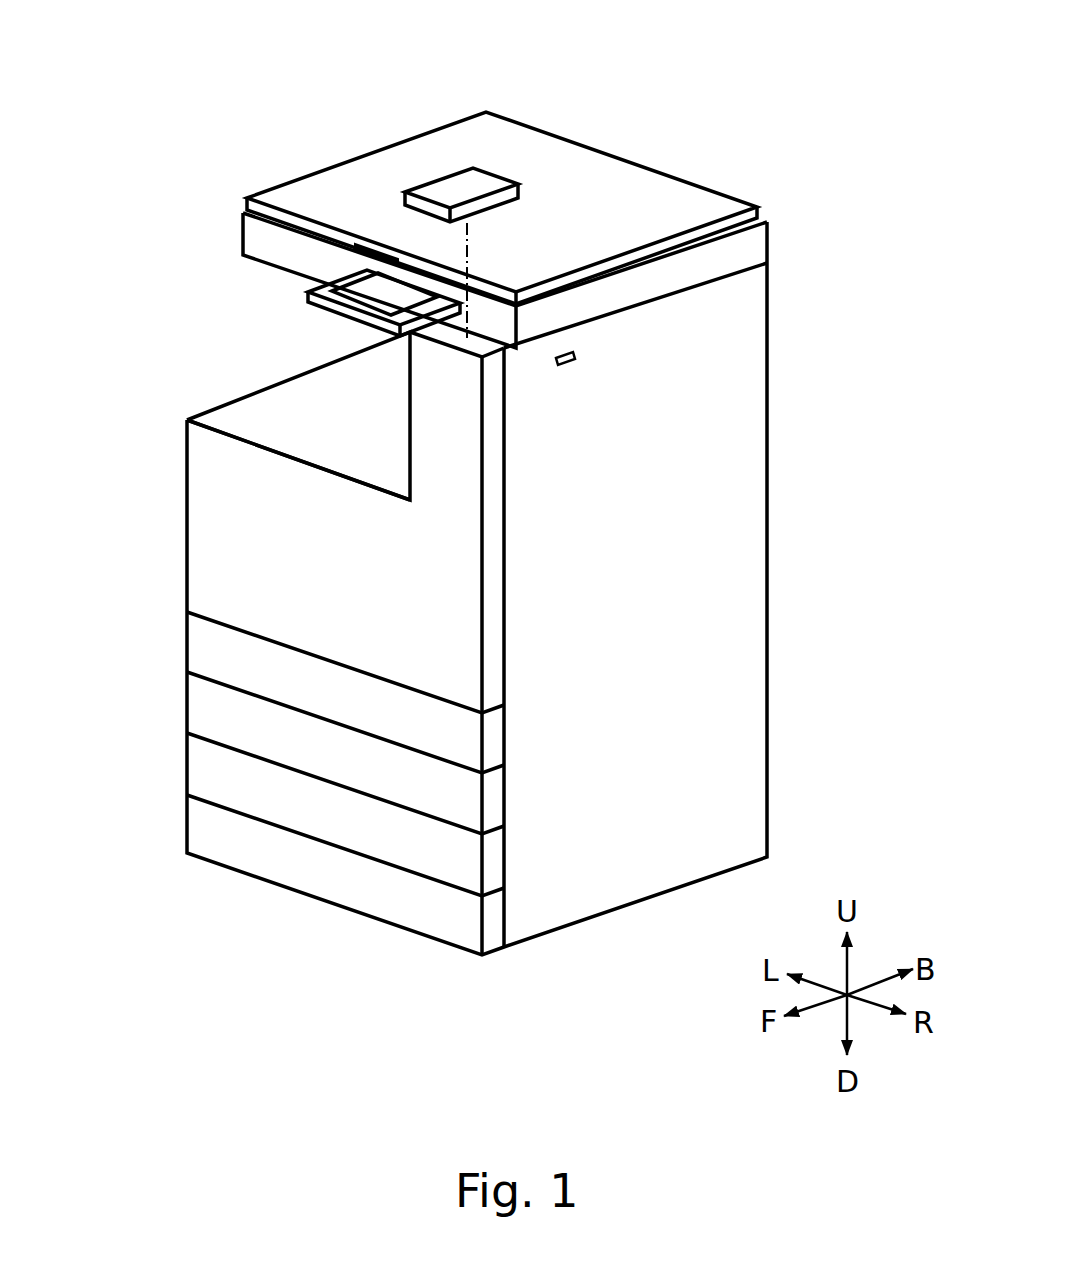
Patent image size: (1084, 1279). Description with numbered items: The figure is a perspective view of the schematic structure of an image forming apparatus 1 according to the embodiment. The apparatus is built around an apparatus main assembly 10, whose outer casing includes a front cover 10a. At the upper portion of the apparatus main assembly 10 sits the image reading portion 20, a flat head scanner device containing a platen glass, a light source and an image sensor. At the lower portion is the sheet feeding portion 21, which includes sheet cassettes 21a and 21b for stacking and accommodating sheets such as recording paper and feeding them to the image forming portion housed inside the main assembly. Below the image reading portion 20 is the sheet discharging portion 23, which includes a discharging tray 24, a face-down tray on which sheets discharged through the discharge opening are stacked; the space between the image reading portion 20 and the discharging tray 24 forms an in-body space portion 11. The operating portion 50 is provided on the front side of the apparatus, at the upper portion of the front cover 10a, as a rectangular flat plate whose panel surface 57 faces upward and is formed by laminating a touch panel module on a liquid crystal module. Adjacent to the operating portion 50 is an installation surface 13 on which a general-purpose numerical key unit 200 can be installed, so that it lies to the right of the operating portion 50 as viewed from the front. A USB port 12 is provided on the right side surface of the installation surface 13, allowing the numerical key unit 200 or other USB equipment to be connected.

The image forming apparatus 1 is at (377, 107).
The image forming apparatus main assembly 10 is at (748, 482).
The front cover 10a is at (452, 494).
The in-body space portion 11 is at (371, 454).
The USB port 12 is at (570, 366).
The installation surface 13 is at (486, 338).
The image reading portion 20 is at (698, 154).
The general-purpose numerical key unit 200 is at (506, 159).
The sheet feeding portion 21 is at (142, 601).
The sheet cassette 21a is at (197, 646).
The sheet cassette 21b is at (197, 768).
The sheet discharging portion 23 is at (204, 417).
The discharging tray 24 is at (289, 396).
The operating portion 50 is at (283, 302).
The panel surface 57 is at (388, 294).